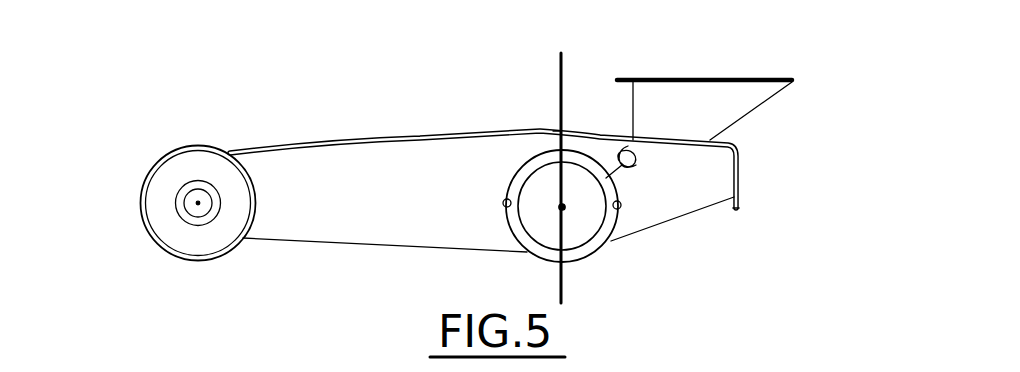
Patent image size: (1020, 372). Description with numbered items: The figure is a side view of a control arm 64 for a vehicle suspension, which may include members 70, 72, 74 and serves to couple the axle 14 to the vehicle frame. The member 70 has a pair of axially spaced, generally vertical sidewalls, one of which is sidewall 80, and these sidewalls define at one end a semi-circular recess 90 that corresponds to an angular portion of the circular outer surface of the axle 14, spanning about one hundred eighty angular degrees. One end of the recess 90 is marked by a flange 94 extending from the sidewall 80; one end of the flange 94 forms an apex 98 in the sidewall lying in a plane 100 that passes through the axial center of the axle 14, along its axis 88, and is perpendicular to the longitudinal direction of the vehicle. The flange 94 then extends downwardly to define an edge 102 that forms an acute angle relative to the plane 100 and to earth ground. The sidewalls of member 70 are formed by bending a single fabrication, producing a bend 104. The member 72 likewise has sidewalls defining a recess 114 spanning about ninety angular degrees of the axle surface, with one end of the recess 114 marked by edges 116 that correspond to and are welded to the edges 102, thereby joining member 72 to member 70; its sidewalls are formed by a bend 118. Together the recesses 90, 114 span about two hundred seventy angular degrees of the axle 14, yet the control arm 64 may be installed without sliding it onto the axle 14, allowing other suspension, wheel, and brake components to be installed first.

The axle 14 is at (577, 260).
The control arm 64 is at (362, 109).
The member 70 is at (305, 283).
The member 72 is at (714, 240).
The member 74 is at (312, 150).
The sidewall 80 is at (395, 223).
The axis 88 is at (564, 209).
The recess 90 is at (503, 195).
The flange 94 is at (606, 152).
The apex 98 is at (553, 131).
The plane 100 is at (565, 60).
The edge 102 is at (628, 146).
The bend 104 is at (520, 252).
The recess 114 is at (625, 210).
The edge 116 is at (613, 168).
The bend 118 is at (617, 240).